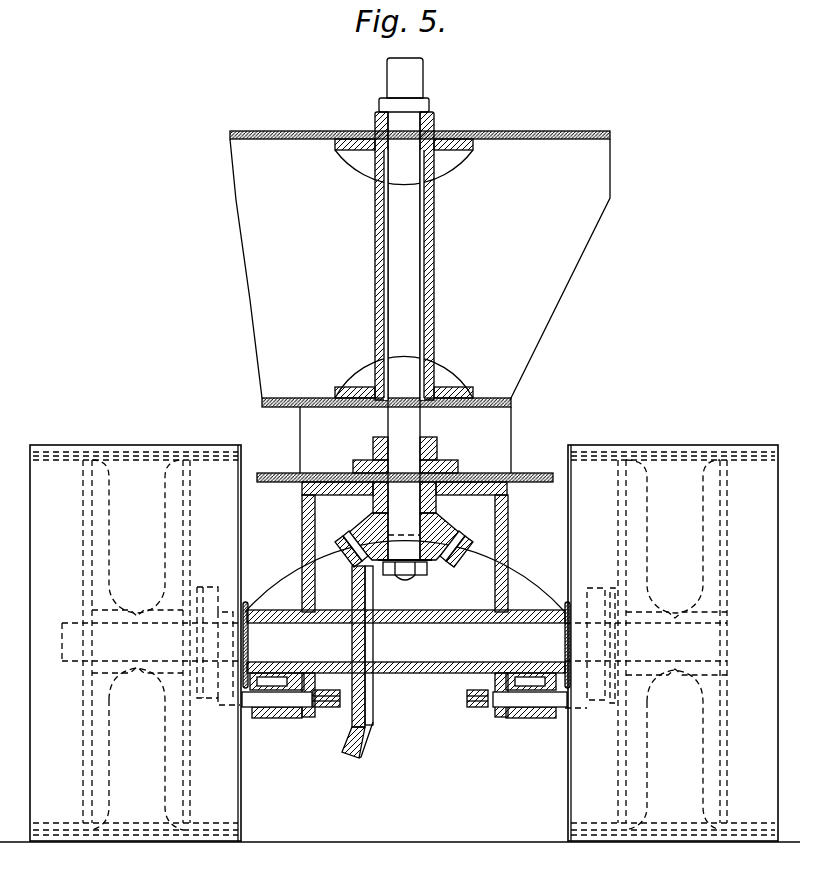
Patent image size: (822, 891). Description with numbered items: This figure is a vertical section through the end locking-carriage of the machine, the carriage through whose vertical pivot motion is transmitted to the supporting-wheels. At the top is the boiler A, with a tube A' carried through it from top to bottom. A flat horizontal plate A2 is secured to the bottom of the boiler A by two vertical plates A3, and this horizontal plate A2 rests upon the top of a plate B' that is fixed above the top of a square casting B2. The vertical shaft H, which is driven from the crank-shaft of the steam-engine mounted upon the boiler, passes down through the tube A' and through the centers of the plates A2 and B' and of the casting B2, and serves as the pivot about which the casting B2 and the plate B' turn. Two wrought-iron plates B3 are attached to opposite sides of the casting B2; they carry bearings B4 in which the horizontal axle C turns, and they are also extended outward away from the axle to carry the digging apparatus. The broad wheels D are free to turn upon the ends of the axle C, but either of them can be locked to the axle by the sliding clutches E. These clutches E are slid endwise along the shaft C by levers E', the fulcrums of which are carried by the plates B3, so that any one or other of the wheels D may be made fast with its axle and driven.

The boiler A is at (420, 269).
The tube A' is at (404, 256).
The flat horizontal plate A2 is at (265, 472).
The vertical plates A3 is at (408, 440).
The plate B' is at (408, 496).
The square casting B2 is at (403, 524).
The wrought-iron plates B3 is at (513, 742).
The bearings B4 is at (432, 662).
The horizontal axle C is at (406, 645).
The broad wheels D is at (404, 631).
The clutches E is at (406, 670).
The levers E' is at (404, 711).
The vertical axis H is at (405, 319).